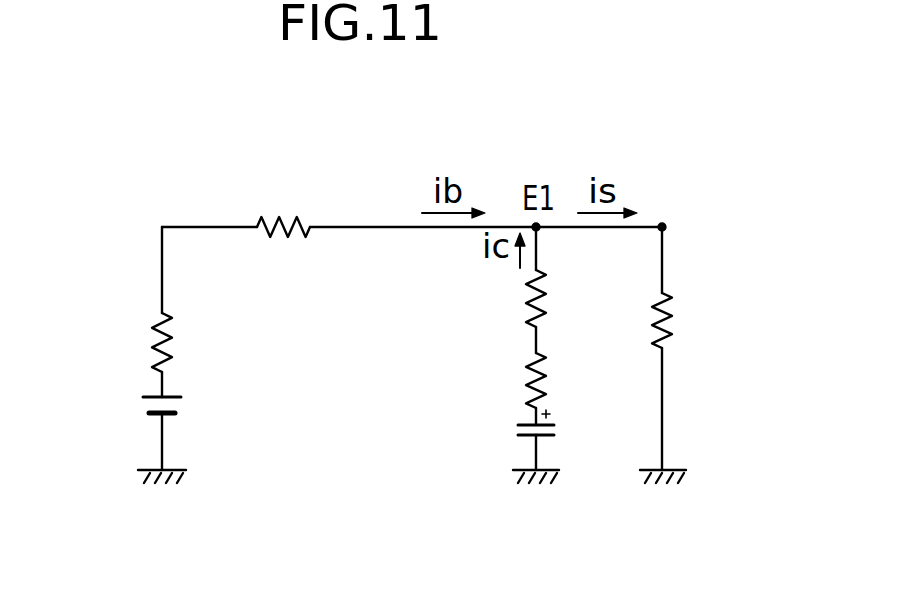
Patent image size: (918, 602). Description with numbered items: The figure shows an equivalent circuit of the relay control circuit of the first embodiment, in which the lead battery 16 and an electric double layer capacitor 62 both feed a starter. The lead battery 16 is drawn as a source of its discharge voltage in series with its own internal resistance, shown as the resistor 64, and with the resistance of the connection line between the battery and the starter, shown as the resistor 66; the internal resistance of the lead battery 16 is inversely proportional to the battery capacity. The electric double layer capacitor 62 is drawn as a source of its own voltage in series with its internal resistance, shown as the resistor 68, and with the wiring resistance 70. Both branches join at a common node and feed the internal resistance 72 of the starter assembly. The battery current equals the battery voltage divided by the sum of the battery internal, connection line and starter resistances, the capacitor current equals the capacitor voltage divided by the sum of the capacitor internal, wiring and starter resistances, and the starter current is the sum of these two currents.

The resistor R2 66 is at (286, 213).
The resistor R1 64 is at (158, 330).
The lead battery 16 is at (175, 412).
The wiring resistance 70 is at (528, 302).
The resistor R4 68 is at (533, 363).
The electric double layer capacitor 62 is at (498, 360).
The internal resistance of the starter assembly 72 is at (668, 303).